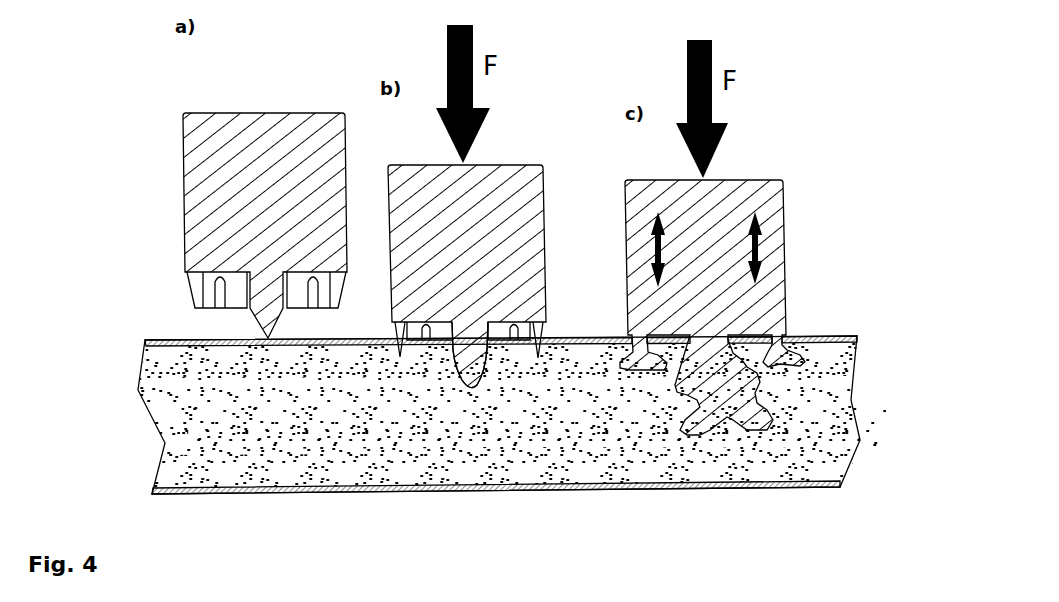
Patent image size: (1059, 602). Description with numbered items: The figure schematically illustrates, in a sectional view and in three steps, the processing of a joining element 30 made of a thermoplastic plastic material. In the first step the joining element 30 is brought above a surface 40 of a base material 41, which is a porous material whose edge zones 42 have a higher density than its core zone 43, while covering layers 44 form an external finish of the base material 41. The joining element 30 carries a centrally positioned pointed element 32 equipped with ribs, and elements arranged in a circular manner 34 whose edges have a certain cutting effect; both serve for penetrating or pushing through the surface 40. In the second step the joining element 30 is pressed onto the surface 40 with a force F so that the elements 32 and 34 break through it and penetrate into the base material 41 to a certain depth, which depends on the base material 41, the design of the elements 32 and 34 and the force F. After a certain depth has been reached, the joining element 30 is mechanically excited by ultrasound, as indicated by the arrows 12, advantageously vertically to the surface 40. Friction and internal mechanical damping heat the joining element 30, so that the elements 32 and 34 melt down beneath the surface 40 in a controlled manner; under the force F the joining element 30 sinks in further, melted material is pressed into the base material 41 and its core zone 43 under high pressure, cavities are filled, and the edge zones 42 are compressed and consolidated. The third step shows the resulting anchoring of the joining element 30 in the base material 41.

The arrows 12 is at (653, 257).
The joining element 30 is at (175, 171).
The pointed element 32 is at (480, 335).
The elements arranged in a circular manner 34 is at (541, 333).
The surface 40 is at (833, 332).
The base material 41 is at (286, 433).
The edge zones 42 is at (152, 368).
The core 43 is at (172, 433).
The covering layers 44 is at (146, 339).